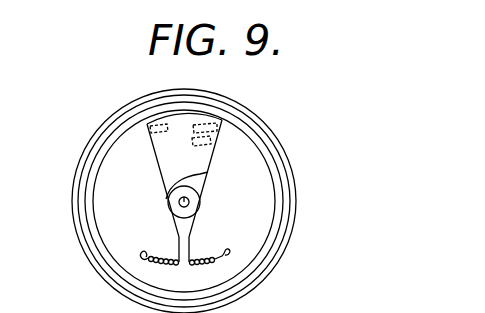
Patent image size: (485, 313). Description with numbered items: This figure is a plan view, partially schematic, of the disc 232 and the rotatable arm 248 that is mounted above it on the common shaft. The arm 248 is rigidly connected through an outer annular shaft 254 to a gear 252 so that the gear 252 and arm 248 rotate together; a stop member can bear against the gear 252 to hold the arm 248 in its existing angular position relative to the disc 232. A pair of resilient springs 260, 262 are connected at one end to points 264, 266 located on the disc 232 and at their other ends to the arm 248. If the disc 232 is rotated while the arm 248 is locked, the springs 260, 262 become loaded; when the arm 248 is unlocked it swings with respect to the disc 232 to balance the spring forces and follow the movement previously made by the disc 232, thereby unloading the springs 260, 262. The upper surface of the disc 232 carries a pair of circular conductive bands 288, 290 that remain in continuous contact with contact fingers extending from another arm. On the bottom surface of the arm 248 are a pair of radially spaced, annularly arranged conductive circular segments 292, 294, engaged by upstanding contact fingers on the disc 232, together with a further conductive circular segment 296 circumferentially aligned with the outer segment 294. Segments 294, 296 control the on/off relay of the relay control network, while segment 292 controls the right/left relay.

The disc 232 is at (318, 204).
The circular conductive band 288 is at (86, 171).
The circular conductive band 290 is at (103, 145).
The rotatable arm 248 is at (159, 185).
The gear 252 is at (201, 193).
The outer annular shaft 254 is at (207, 172).
The conductive circular segment 296 is at (154, 124).
The conductive circular segment 294 is at (214, 126).
The conductive circular segment 292 is at (212, 142).
The resilient spring 260 is at (155, 263).
The point 264 is at (141, 255).
The resilient spring 262 is at (202, 256).
The point 266 is at (226, 255).